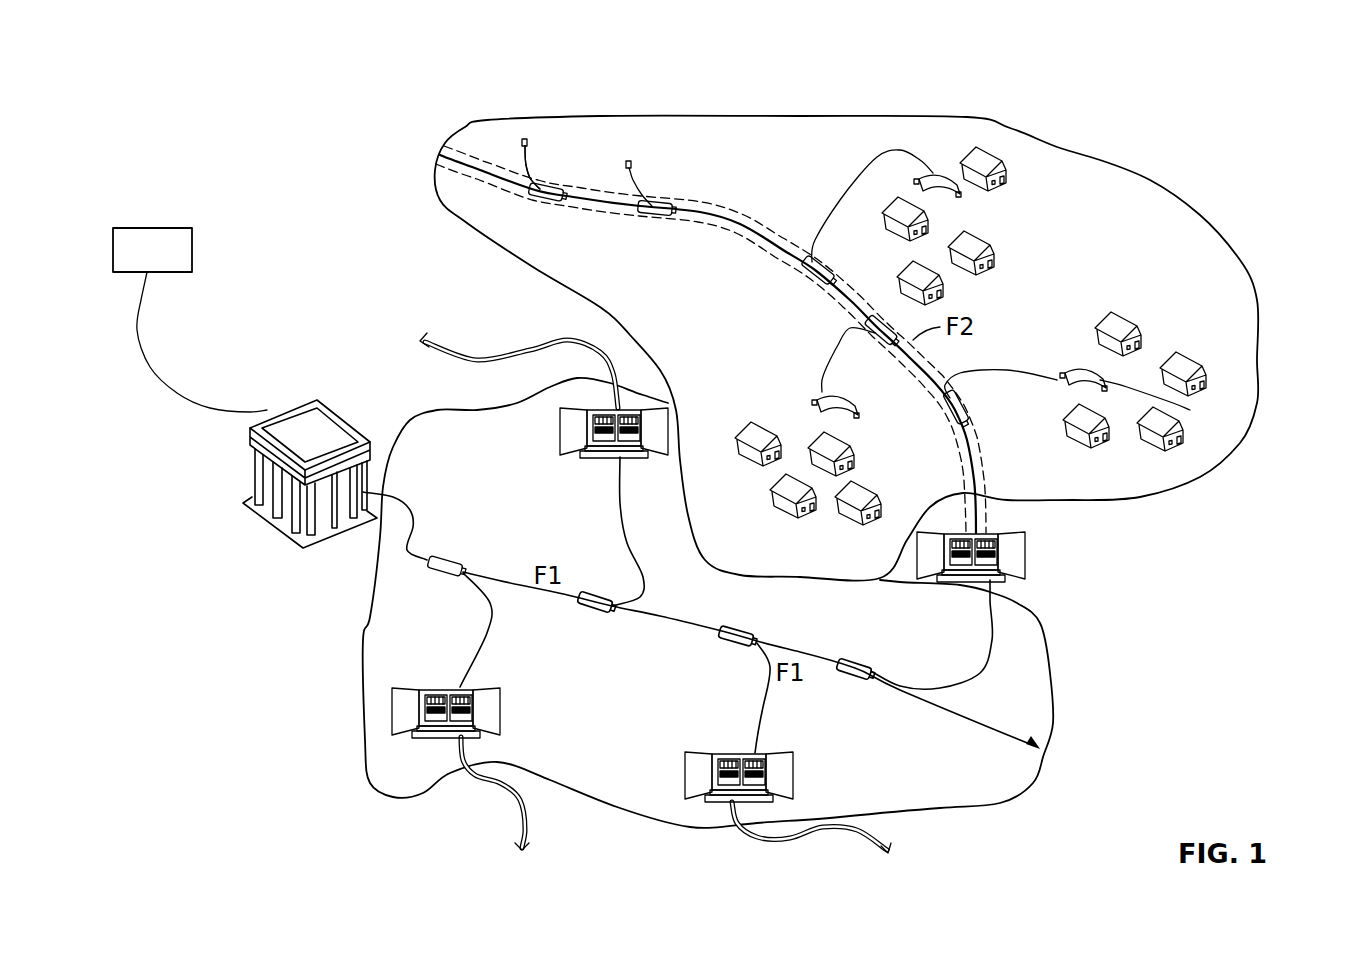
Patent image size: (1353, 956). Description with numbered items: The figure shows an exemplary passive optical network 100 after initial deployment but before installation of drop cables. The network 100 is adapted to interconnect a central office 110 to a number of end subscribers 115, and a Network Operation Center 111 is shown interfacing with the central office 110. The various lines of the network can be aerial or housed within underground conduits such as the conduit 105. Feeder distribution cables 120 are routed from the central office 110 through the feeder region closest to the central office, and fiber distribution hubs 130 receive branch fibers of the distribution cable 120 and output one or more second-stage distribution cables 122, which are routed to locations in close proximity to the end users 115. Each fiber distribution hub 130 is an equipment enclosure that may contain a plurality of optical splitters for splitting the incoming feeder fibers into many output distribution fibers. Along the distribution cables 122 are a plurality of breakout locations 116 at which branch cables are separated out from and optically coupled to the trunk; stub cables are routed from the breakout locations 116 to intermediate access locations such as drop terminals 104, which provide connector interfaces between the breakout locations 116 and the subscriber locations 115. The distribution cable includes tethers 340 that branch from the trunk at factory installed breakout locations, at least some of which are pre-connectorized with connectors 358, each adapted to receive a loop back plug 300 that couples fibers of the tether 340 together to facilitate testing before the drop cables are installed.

The passive optical network 100 is at (350, 102).
The drop terminal 104 is at (937, 177).
The conduit 105 is at (687, 197).
The central office 110 is at (255, 483).
The Network Operation Center 111 is at (192, 252).
The end subscribers 115 is at (977, 233).
The breakout locations 116 is at (653, 213).
The feeder distribution cables 120 is at (413, 527).
The F2 distribution cables 122 is at (972, 463).
The fiber distribution hub 130 is at (1025, 562).
The loop back plug 300 is at (527, 143).
The tether 340 is at (528, 163).
The connector 358 is at (523, 139).